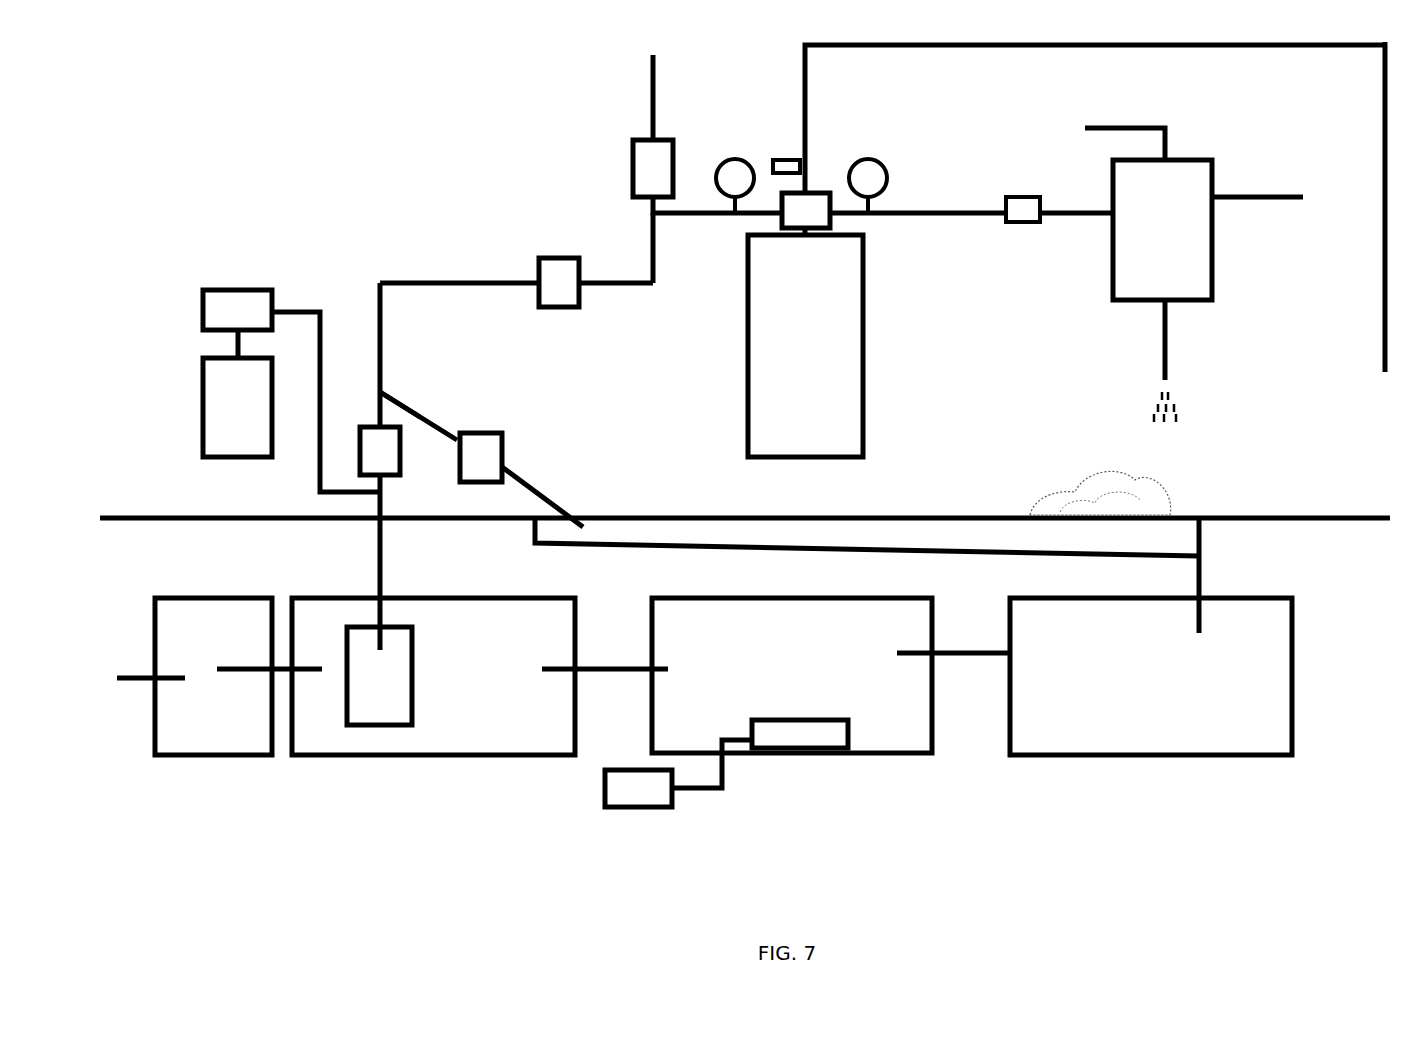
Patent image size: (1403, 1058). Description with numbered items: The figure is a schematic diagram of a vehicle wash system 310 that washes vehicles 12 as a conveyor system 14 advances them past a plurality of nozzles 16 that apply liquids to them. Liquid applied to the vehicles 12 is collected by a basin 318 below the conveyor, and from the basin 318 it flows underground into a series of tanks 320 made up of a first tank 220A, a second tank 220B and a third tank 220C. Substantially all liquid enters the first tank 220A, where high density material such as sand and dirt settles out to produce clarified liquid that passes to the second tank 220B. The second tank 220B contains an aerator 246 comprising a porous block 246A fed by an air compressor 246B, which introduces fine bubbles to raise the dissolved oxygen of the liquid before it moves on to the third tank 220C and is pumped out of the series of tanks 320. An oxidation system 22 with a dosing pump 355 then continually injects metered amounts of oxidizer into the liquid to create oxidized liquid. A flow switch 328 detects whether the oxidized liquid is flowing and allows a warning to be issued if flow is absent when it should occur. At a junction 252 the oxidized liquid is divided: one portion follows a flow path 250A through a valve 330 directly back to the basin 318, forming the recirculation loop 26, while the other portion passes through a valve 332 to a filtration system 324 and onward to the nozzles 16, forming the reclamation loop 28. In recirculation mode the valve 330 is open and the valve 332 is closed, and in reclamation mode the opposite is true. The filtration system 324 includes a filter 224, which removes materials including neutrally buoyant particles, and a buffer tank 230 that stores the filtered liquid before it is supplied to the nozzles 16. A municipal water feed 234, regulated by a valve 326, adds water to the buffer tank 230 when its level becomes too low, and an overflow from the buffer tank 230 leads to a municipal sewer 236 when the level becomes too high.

The vehicle 12 is at (1179, 485).
The conveyor system 14 is at (153, 510).
The nozzles 16 is at (1190, 378).
The oxidation system 22 is at (266, 270).
The recirculation loop 26 is at (535, 468).
The reclamation loop 28 is at (357, 367).
The filter 224 is at (825, 345).
The buffer tank 230 is at (1141, 239).
The municipal water feed 234 is at (646, 67).
The municipal sewer 236 is at (1370, 379).
The aerator 246 is at (769, 810).
The porous block 246A is at (834, 756).
The air compressor 246B is at (600, 814).
The flow path 250A is at (449, 426).
The junction 252 is at (395, 386).
The vehicle wash system 310 is at (404, 212).
The basin 318 is at (703, 485).
The series of tanks 320 is at (392, 795).
The filtration system 324 is at (580, 207).
The valve 326 is at (678, 145).
The flow switch 328 is at (405, 474).
The valve 330 is at (505, 440).
The valve 332 is at (589, 304).
The dosing pump 355 is at (216, 294).
The first tank 220A is at (1202, 719).
The second tank 220B is at (738, 625).
The third tank 220C is at (507, 717).